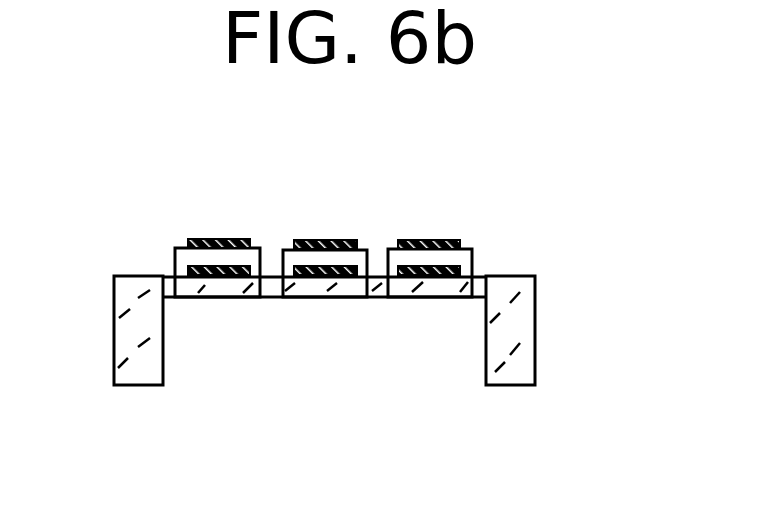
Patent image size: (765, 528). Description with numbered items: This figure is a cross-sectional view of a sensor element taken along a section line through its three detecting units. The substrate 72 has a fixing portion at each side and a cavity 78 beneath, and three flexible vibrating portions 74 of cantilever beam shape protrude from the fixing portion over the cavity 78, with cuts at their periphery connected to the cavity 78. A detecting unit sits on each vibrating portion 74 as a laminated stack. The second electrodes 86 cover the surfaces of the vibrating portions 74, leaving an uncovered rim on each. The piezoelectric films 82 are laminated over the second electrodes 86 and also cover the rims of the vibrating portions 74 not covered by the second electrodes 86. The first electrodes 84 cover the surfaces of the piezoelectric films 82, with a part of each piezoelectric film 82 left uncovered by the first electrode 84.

The substrate 72 is at (517, 370).
The vibrating portion 74 is at (417, 278).
The cavity 78 is at (258, 345).
The piezoelectric film 82 is at (385, 263).
The first electrode 84 is at (428, 247).
The second electrode 86 is at (463, 273).